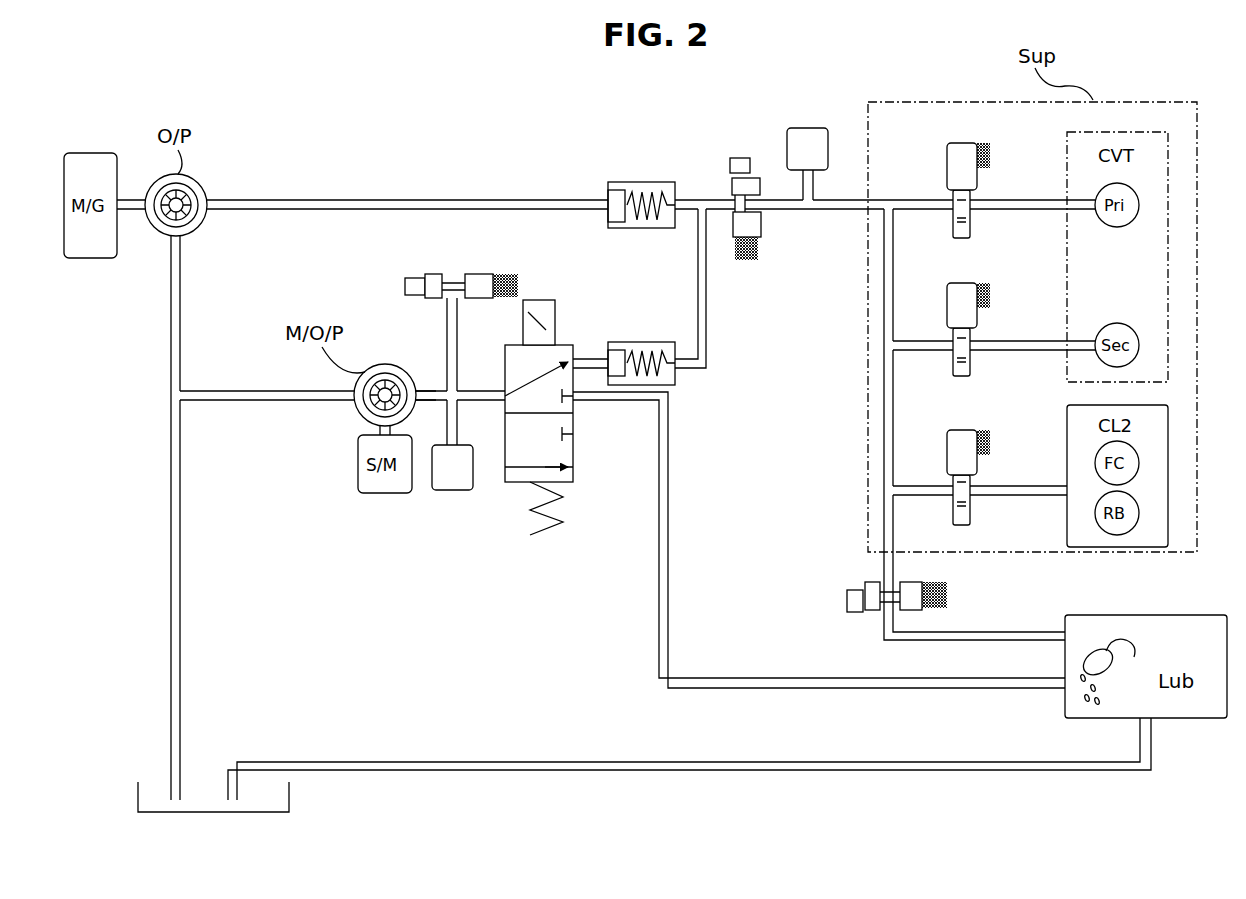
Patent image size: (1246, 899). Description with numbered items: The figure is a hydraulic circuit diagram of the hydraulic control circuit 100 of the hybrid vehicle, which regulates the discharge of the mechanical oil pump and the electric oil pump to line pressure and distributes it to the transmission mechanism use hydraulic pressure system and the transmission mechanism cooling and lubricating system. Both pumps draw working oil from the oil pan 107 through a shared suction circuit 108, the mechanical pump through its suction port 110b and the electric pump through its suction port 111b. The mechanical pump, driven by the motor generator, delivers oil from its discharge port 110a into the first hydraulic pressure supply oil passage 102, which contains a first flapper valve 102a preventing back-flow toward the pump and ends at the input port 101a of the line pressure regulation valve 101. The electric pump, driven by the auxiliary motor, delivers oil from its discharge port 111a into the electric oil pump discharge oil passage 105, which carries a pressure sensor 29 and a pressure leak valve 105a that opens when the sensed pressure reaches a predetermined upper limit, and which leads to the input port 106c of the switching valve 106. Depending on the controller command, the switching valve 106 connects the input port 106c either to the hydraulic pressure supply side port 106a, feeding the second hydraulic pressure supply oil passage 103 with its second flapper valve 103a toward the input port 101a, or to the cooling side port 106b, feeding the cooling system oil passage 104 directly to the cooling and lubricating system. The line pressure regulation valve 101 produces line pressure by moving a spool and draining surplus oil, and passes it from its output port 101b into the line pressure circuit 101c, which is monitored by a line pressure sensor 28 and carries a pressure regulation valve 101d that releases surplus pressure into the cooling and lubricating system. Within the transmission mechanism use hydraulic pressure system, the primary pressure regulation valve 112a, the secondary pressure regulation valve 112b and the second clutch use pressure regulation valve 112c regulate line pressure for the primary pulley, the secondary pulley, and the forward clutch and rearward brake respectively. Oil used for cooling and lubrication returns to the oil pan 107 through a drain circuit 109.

The hydraulic control circuit 100 is at (150, 108).
The first hydraulic pressure supply oil passage 102 is at (405, 199).
The first flapper valve 102a is at (632, 182).
The second hydraulic pressure supply oil passage 103 is at (597, 358).
The second flapper valve 103a is at (653, 342).
The cooling system oil passage 104 is at (658, 523).
The electric oil pump discharge oil passage 105 is at (437, 388).
The pressure leak valve 105a is at (447, 274).
The switching valve 106 is at (568, 330).
The hydraulic pressure supply side port 106a is at (586, 358).
The cooling side port 106b is at (578, 397).
The input port 106c is at (503, 400).
The oil pan 107 is at (138, 792).
The suction circuit 108 is at (171, 520).
The drain circuit 109 is at (618, 762).
The discharge port 110a is at (216, 199).
The suction port 110b is at (172, 248).
The discharge port 111a is at (427, 402).
The suction port 111b is at (352, 400).
The primary pressure regulation valve 112a is at (962, 143).
The secondary pressure regulation valve 112b is at (962, 283).
The second clutch use pressure regulation valve 112c is at (962, 430).
The line pressure regulation valve 101 is at (742, 157).
The input port 101a is at (730, 201).
The output port 101b is at (760, 200).
The line pressure circuit 101c is at (782, 212).
The pressure regulation valve 101d is at (875, 613).
The line pressure sensor 28 is at (806, 128).
The pressure sensor 29 is at (452, 493).